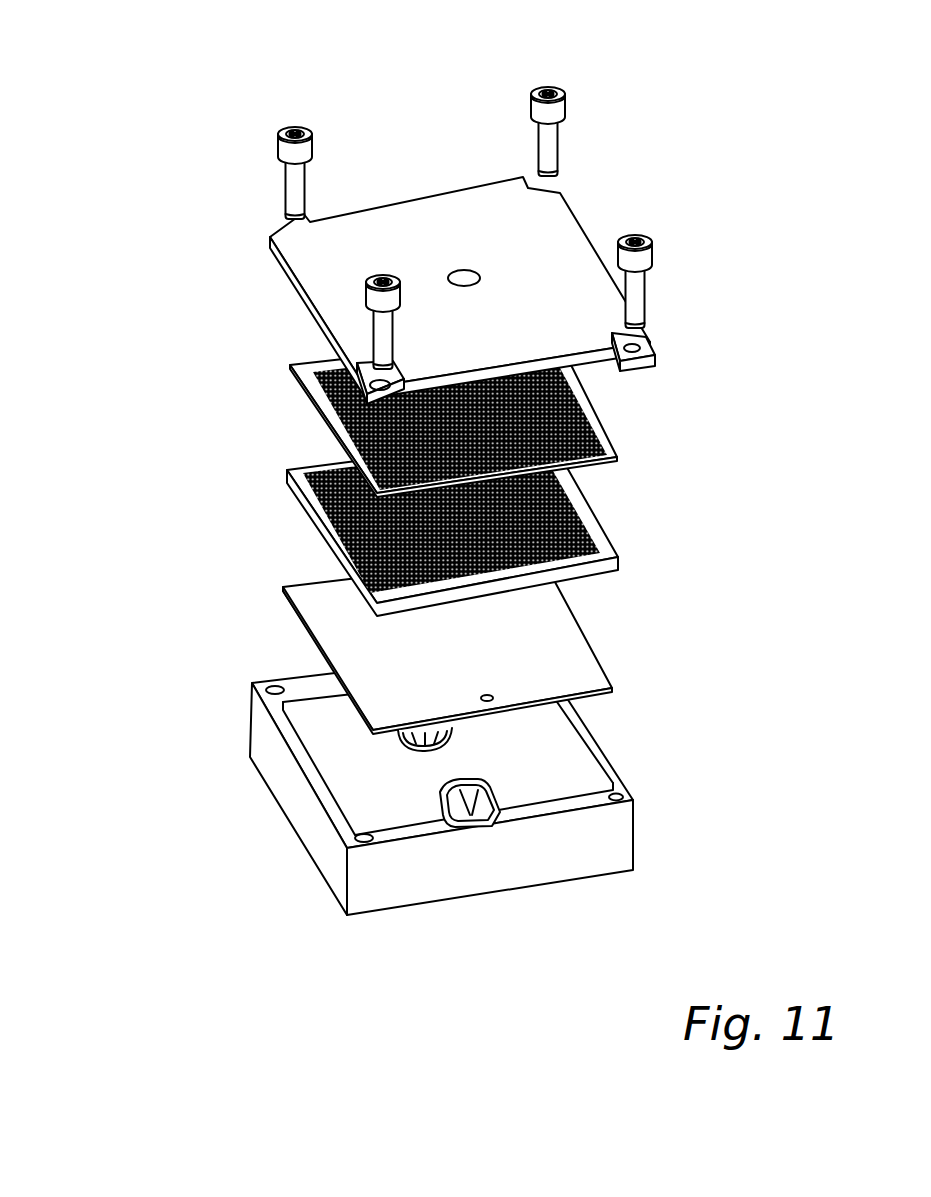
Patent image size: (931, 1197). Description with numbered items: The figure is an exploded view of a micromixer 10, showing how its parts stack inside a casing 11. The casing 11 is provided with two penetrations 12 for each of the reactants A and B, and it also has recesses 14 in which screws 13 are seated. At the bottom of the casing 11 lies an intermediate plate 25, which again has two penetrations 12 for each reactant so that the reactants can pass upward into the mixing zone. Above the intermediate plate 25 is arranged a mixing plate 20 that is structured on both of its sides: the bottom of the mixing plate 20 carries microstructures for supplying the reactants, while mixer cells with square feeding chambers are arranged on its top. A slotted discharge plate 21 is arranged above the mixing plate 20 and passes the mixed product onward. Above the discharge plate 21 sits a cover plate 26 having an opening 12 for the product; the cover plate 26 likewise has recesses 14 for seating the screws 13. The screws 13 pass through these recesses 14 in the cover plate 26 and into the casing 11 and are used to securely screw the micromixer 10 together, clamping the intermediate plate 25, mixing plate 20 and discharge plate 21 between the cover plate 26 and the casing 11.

The micromixer 10 is at (158, 682).
The casing 11 is at (610, 847).
The penetration 12 is at (461, 276).
The screw 13 is at (549, 139).
The recess 14 is at (637, 347).
The mixing plate 20 is at (607, 550).
The slotted discharge plate 21 is at (607, 452).
The intermediate plate 25 is at (585, 657).
The cover plate 26 is at (568, 247).